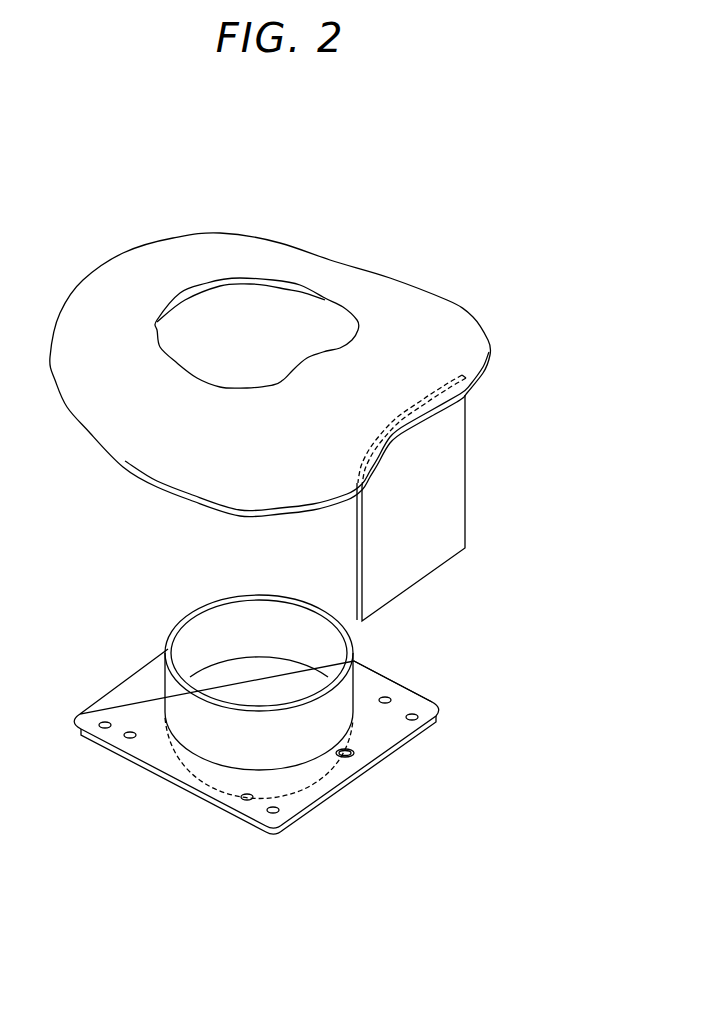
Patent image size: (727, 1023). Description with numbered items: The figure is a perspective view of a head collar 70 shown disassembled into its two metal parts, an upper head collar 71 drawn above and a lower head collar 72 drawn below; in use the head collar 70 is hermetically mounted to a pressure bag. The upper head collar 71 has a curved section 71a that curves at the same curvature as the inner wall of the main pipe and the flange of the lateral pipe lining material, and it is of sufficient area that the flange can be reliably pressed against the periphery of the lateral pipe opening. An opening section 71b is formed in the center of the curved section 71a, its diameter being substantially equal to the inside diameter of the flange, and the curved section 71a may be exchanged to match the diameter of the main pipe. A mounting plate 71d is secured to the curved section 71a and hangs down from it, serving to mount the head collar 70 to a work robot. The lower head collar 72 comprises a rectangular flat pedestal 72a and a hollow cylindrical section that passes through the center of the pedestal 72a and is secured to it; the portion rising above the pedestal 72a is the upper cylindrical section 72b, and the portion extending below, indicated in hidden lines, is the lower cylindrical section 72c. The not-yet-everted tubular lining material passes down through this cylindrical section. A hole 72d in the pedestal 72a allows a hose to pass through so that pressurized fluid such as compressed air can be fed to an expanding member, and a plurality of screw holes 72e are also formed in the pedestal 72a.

The head collar 70 is at (522, 483).
The upper head collar 71 is at (443, 300).
The curved section 71a is at (383, 297).
The opening section 71b is at (267, 312).
The mounting plate 71d is at (445, 452).
The lower head collar 72 is at (433, 732).
The pedestal 72a is at (368, 685).
The upper cylindrical section 72b is at (210, 608).
The lower cylindrical section 72c is at (303, 780).
The hole 72d is at (355, 758).
The screw holes 72e is at (133, 732).